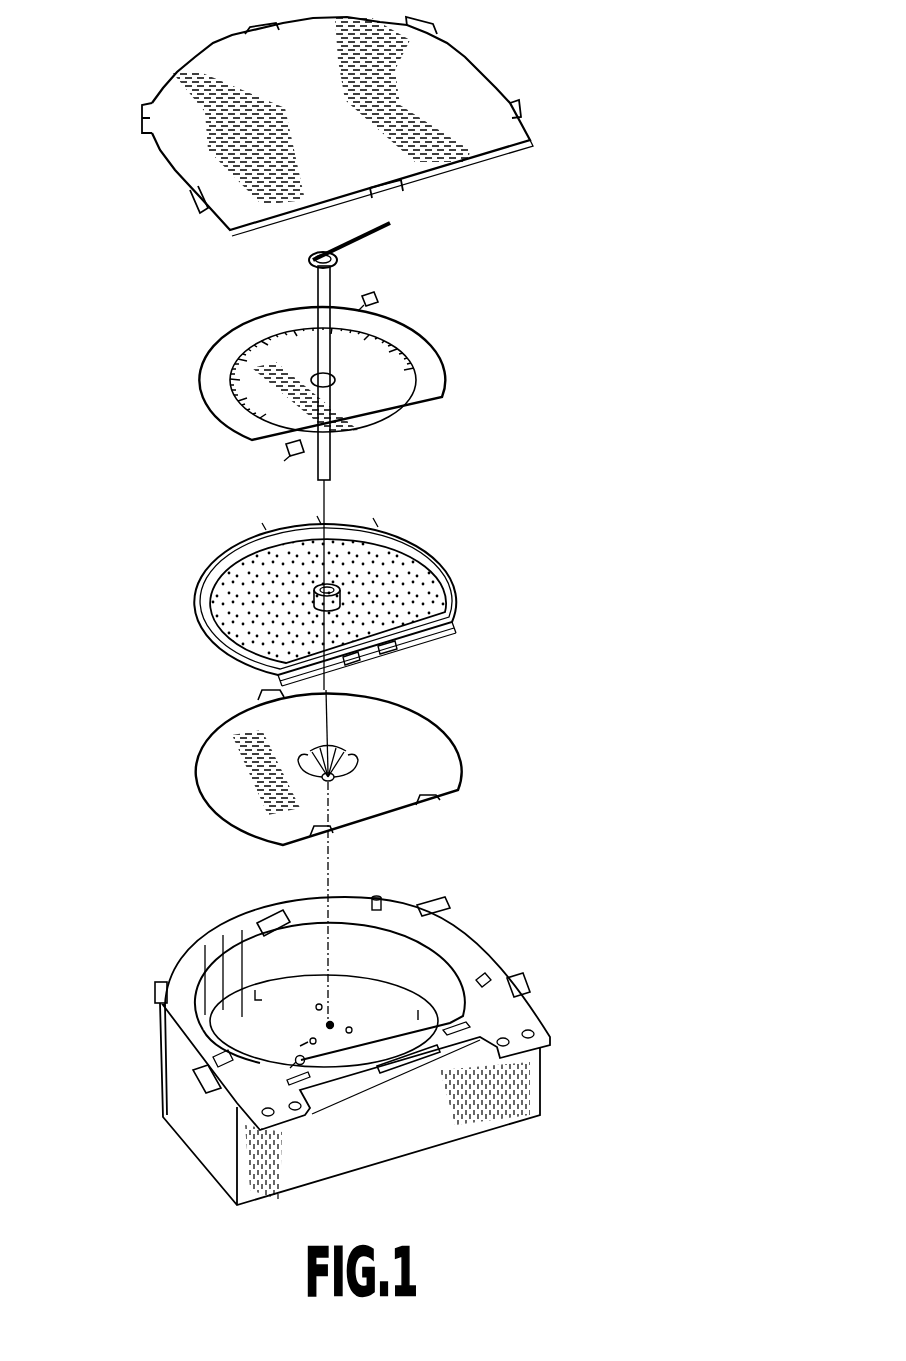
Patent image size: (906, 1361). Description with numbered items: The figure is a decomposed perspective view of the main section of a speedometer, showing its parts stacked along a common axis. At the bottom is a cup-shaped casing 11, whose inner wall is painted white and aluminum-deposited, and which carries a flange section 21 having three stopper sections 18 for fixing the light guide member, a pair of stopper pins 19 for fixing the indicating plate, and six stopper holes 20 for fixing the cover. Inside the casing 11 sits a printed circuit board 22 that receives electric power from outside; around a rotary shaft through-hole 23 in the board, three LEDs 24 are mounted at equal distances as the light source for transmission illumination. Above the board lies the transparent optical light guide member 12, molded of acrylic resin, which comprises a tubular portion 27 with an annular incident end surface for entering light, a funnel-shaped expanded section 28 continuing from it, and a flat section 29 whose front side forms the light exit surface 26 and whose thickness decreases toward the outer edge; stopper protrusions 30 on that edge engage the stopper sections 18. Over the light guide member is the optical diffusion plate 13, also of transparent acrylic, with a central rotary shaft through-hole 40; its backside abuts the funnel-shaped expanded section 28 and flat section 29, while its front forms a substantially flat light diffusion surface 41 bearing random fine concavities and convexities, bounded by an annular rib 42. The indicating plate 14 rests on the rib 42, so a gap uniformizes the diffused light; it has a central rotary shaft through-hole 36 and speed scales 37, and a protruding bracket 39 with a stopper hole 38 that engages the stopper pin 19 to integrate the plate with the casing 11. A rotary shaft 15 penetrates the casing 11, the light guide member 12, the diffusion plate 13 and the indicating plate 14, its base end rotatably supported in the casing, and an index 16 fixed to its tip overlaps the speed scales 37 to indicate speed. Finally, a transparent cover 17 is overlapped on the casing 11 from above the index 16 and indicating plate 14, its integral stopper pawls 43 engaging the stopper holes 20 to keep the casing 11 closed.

The casing 11 is at (388, 1147).
The optical light guide member 12 is at (476, 749).
The optical diffusion plate 13 is at (468, 562).
The indicating plate 14 is at (426, 422).
The rotary shaft 15 is at (333, 468).
The index 16 is at (393, 229).
The transparent cover 17 is at (445, 85).
The stopper sections 18 is at (428, 987).
The stopper pins 19 is at (376, 897).
The stopper holes 20 is at (270, 912).
The flange section 21 is at (460, 940).
The printed circuit board 22 is at (223, 1005).
The rotary shaft through-hole 23 is at (334, 1023).
The LEDs 24 is at (318, 1004).
The light exit surface 26 is at (408, 712).
The tubular portion 27 is at (340, 778).
The funnel-shaped expanded section 28 is at (317, 762).
The flat section 29 is at (215, 794).
The stopper protrusions 30 is at (260, 695).
The rotary shaft through-hole 36 is at (337, 382).
The speed scales 37 is at (400, 342).
The stopper hole 38 is at (368, 294).
The bracket 39 is at (380, 303).
The rotary shaft through-hole 40 is at (313, 585).
The light diffusion surface 41 is at (375, 545).
The rib 42 is at (208, 556).
The stopper pawl 43 is at (254, 28).